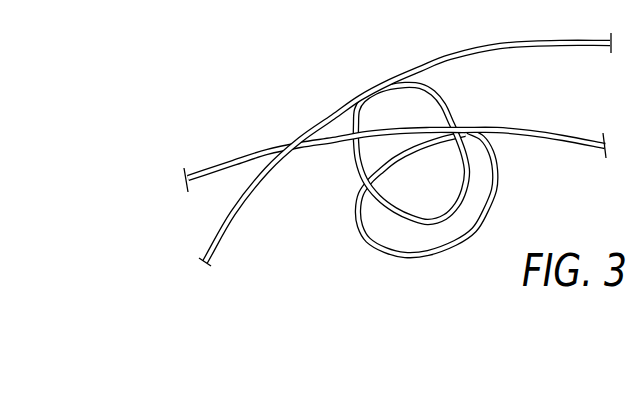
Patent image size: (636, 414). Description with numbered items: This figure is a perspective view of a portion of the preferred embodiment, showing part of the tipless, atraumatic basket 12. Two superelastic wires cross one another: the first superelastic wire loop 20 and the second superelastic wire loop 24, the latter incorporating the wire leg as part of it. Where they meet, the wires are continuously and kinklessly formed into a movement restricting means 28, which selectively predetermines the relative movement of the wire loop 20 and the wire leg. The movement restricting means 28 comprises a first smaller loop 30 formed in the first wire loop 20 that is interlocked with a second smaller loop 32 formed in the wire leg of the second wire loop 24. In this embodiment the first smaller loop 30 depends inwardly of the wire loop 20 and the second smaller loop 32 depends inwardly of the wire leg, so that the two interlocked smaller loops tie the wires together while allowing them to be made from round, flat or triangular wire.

The basket 12 is at (405, 152).
The superelastic wire loop 20 is at (247, 212).
The second superelastic wire loop 24 is at (210, 172).
The movement restricting means 28 is at (403, 166).
The first smaller loop 30 is at (422, 86).
The second smaller loop 32 is at (367, 242).